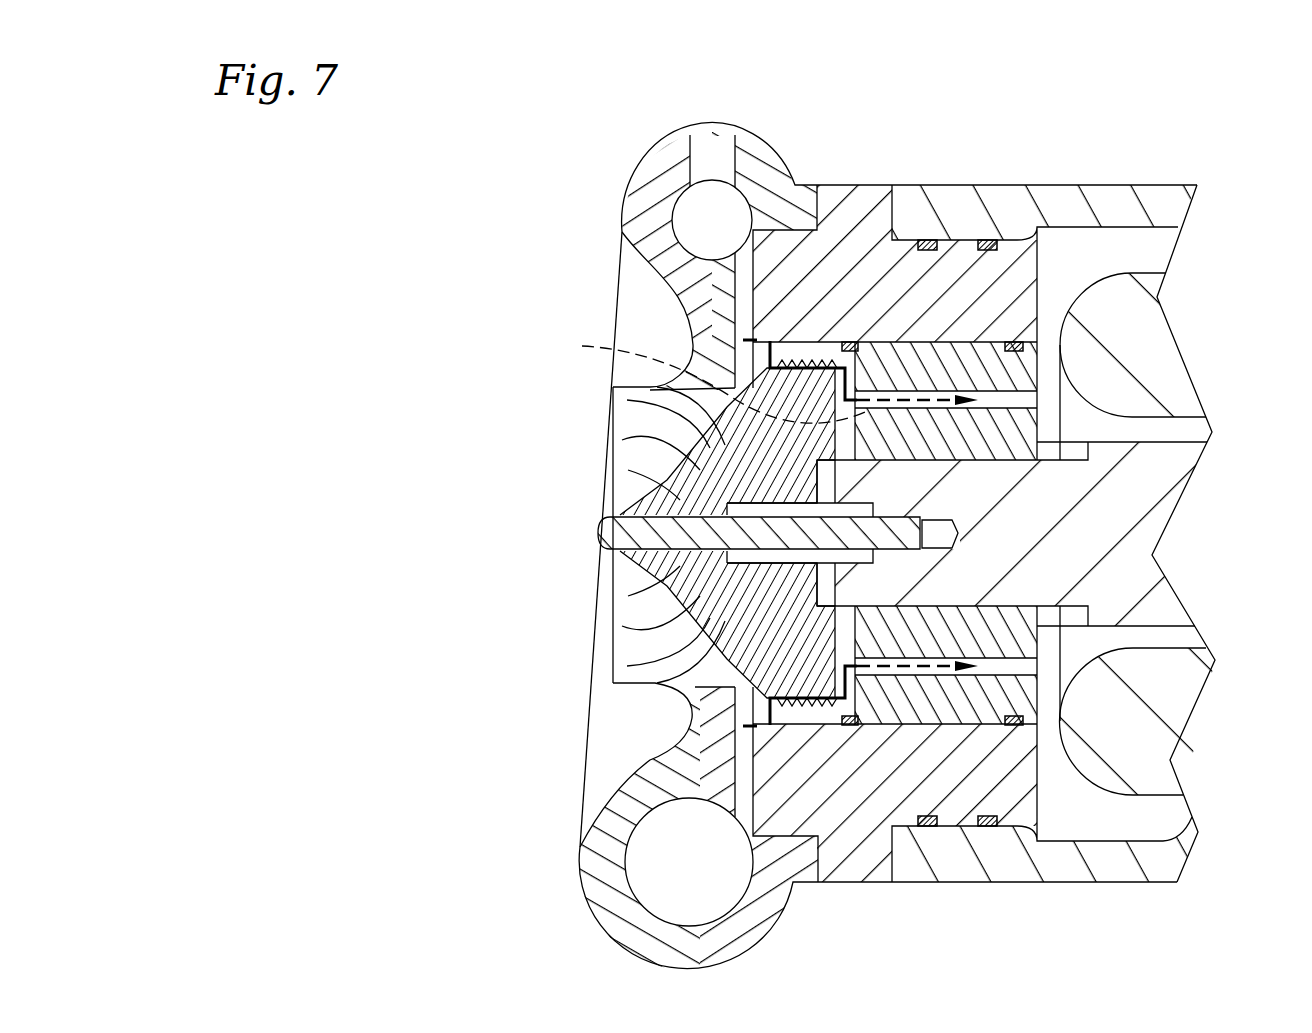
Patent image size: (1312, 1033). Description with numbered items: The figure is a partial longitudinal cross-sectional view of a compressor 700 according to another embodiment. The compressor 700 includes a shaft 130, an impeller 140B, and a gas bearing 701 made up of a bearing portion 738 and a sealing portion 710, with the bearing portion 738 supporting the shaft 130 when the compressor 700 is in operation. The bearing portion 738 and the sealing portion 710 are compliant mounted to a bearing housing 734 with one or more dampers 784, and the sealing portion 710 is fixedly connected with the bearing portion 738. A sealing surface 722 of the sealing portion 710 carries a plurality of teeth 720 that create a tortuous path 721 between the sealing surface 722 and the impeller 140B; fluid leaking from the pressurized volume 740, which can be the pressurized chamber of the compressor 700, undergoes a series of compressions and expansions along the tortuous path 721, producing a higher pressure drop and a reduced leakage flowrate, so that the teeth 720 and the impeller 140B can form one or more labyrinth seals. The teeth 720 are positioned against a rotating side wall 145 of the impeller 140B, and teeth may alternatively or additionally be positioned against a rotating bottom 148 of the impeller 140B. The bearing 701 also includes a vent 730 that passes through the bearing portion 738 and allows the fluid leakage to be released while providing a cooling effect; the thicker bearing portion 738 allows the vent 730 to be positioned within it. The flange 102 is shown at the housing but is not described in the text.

The compressor 700 is at (1145, 140).
The gas bearing 701 is at (1005, 330).
The housing flange 102 is at (1172, 185).
The sealing portion 710 is at (790, 180).
The pressurized volume 740 is at (688, 205).
The tortuous path 721 is at (699, 380).
The impeller 140B is at (628, 452).
The sealing surface 722 is at (793, 687).
The plurality of teeth 720 is at (760, 693).
The rotating side wall 145 is at (790, 733).
The rotating bottom 148 is at (880, 740).
The damper 784 is at (1015, 724).
The shaft 130 is at (1132, 498).
The vent 730 is at (1017, 400).
The bearing housing 734 is at (850, 283).
The bearing portion 738 is at (928, 420).